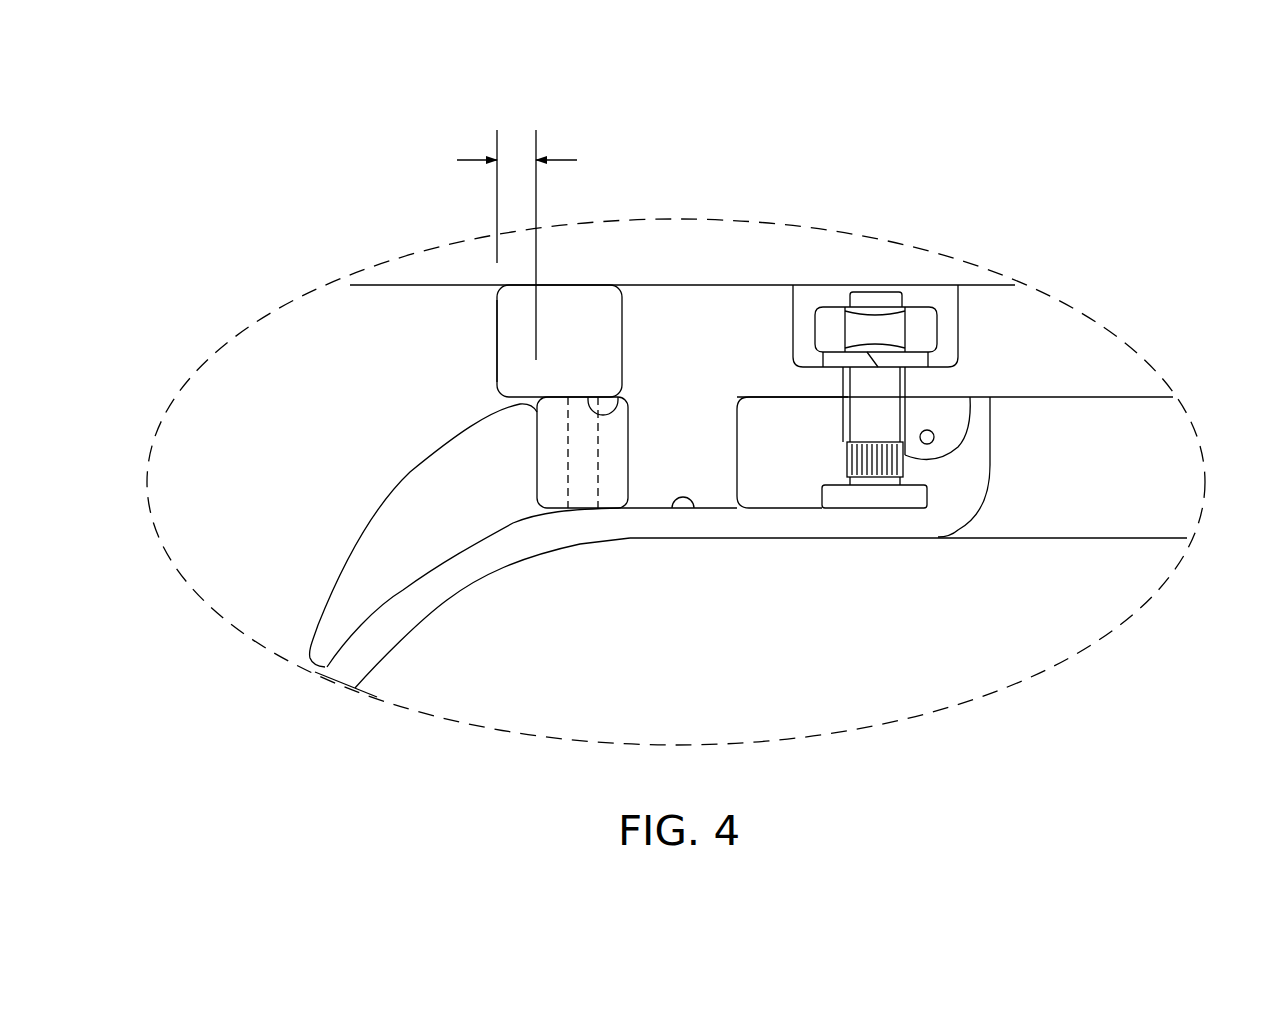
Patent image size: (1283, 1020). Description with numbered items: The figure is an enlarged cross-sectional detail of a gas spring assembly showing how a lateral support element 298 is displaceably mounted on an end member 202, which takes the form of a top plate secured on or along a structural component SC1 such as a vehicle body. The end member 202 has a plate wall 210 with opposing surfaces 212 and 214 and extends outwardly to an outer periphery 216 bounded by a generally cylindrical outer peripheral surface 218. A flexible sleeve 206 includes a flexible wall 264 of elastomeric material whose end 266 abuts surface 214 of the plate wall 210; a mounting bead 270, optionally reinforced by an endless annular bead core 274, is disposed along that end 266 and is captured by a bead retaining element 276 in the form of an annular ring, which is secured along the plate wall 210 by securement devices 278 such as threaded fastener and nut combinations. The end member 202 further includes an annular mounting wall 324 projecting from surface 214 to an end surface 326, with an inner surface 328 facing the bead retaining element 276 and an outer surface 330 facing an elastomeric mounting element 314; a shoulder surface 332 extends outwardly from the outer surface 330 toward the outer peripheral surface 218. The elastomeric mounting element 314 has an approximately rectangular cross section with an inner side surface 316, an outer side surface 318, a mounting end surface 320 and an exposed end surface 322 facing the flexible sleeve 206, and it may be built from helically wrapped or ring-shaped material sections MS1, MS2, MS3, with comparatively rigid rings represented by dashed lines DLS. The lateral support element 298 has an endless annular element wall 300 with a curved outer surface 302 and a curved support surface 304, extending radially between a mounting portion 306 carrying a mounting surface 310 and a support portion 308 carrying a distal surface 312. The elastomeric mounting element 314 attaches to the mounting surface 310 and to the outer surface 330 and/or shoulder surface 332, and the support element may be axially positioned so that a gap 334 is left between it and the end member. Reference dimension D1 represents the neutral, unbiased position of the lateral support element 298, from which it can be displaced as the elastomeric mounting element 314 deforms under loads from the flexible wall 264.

The end member 202 is at (1090, 410).
The flexible sleeve 206 is at (450, 600).
The plate wall 210 is at (1075, 338).
The surface 212 is at (975, 273).
The surface 214 is at (1127, 398).
The outer periphery 216 is at (610, 338).
The outer peripheral surface 218 is at (497, 318).
The flexible wall 264 is at (350, 668).
The end 266 is at (987, 515).
The mounting bead 270 is at (932, 410).
The bead core 274 is at (937, 433).
The bead retaining element 276 is at (757, 405).
The securement devices 278 is at (912, 283).
The lateral support element 298 is at (362, 527).
The element wall 300 is at (367, 567).
The outer surface 302 is at (403, 475).
The support surface 304 is at (400, 593).
The mounting portion 306 is at (445, 460).
The support portion 308 is at (327, 607).
The mounting surface 310 is at (540, 505).
The distal surface 312 is at (313, 665).
The elastomeric mounting element 314 is at (622, 505).
The inner side surface 316 is at (623, 512).
The outer side surface 318 is at (553, 513).
The mounting end surface 320 is at (612, 440).
The exposed end surface 322 is at (590, 465).
The annular mounting wall 324 is at (707, 470).
The end surface 326 is at (697, 506).
The inner surface 328 is at (725, 413).
The outer surface 330 is at (628, 427).
The shoulder surface 332 is at (533, 395).
The gap 334 is at (478, 401).
The reference dimension D1 is at (457, 161).
The dashed lines DLS is at (563, 432).
The material section MS1 is at (550, 445).
The material section MS2 is at (582, 425).
The material section MS3 is at (615, 447).
The structural component SC1 is at (827, 260).